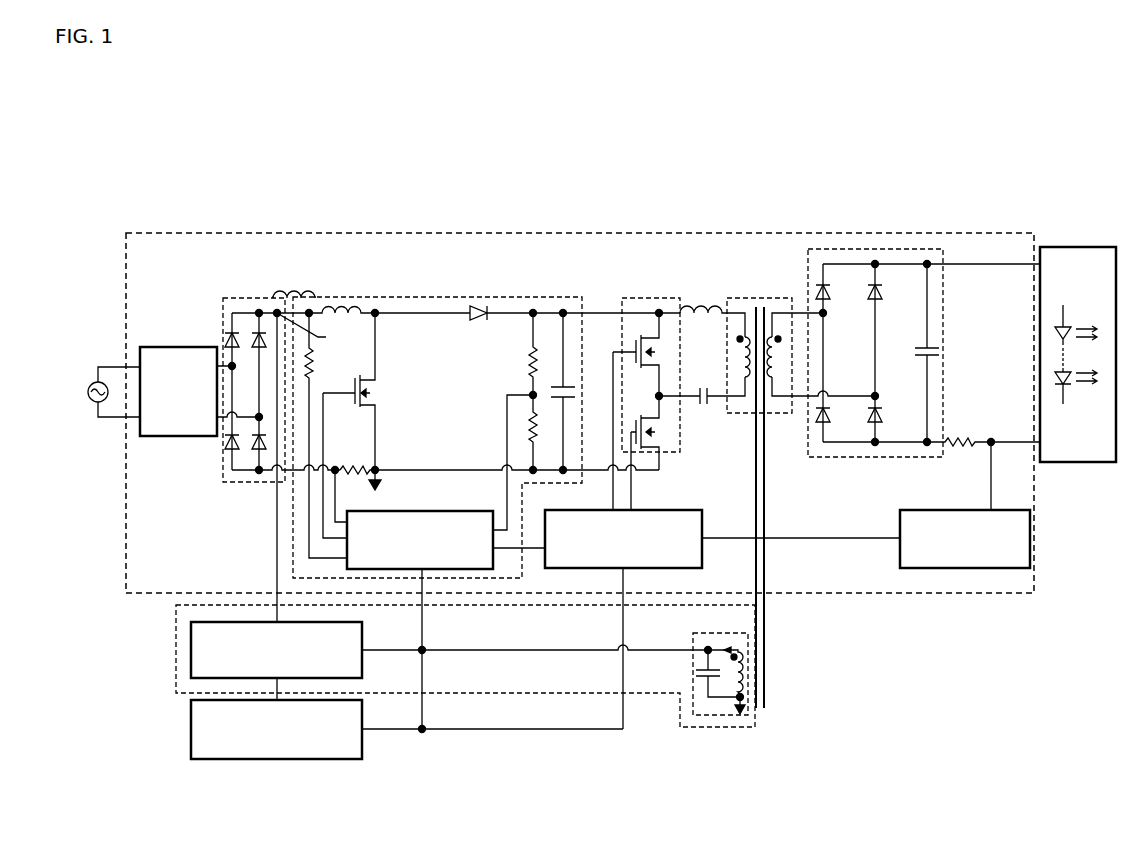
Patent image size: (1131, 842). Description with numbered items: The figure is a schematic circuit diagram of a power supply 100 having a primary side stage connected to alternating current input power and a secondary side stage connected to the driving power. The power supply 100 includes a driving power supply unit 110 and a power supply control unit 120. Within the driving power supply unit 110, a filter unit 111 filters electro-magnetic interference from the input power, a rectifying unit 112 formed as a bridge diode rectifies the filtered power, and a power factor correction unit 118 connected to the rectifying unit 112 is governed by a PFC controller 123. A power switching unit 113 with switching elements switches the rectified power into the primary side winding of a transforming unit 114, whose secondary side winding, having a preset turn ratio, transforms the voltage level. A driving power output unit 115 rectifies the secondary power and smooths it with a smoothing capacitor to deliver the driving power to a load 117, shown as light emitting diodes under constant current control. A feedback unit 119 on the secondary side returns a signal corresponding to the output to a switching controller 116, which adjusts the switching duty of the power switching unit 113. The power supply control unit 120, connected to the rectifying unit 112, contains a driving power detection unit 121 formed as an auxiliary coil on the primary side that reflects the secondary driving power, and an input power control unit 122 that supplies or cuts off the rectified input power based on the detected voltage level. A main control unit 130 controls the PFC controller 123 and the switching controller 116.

The power supply 100 is at (99, 148).
The driving power supply unit 110 is at (584, 232).
The filter unit 111 is at (178, 438).
The rectifying unit 112 is at (250, 298).
The power switching unit 113 is at (651, 297).
The transforming unit 114 is at (762, 297).
The driving power output unit 115 is at (855, 458).
The switching controller 116 is at (688, 510).
The load 117 is at (1078, 463).
The power factor correction unit 118 is at (441, 297).
The feedback unit 119 is at (900, 548).
The power supply control unit 120 is at (717, 728).
The driving power detection unit 121 is at (693, 680).
The input power control unit 122 is at (191, 650).
The PFC controller 123 is at (408, 511).
The main control unit 130 is at (191, 734).